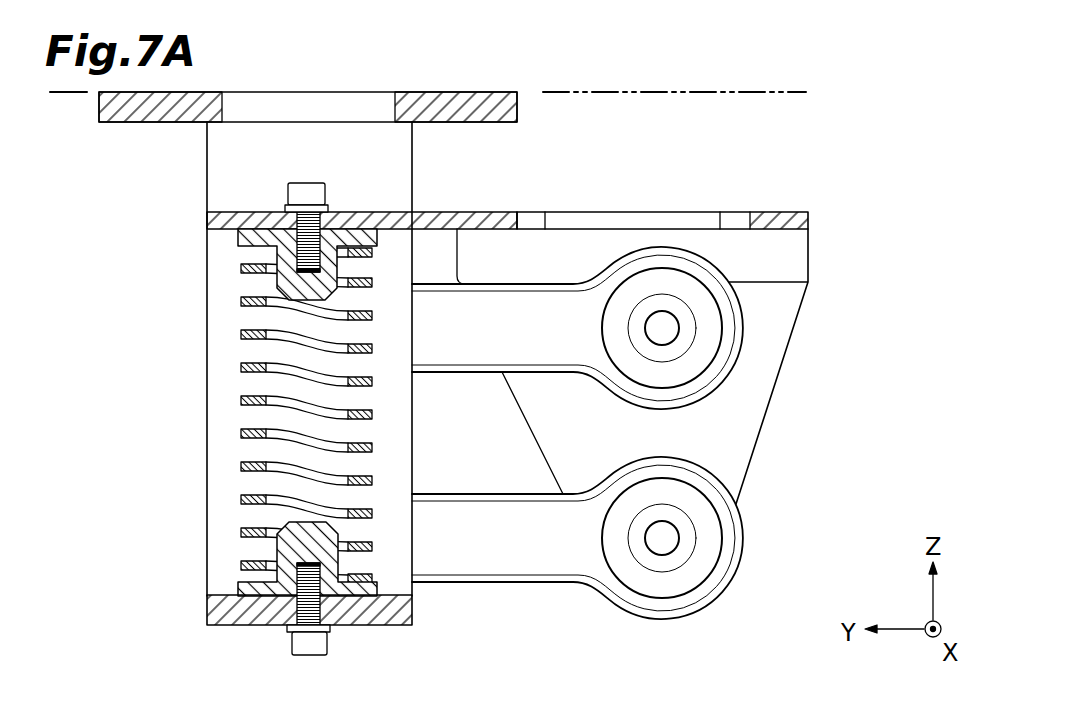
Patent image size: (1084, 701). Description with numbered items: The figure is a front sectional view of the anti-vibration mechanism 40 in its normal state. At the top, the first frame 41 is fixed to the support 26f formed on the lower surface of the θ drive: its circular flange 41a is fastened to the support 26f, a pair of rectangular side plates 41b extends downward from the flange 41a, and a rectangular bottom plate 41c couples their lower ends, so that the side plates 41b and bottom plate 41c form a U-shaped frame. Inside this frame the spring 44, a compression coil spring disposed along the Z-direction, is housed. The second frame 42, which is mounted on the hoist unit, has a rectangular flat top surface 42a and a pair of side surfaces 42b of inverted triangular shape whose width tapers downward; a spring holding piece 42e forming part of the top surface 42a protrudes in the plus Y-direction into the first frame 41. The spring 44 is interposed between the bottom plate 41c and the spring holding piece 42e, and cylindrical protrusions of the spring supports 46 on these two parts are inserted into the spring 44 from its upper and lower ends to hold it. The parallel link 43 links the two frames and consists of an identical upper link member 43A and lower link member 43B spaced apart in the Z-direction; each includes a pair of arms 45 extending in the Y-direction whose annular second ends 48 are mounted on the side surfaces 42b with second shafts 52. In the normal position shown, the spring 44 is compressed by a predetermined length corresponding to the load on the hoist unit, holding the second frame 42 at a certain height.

The anti-vibration mechanism 40 is at (736, 186).
The support 26f is at (588, 96).
The first frame 41 is at (203, 637).
The flange 41a is at (433, 92).
The side plates 41b is at (206, 499).
The bottom plate 41c is at (253, 626).
The second frame 42 is at (780, 408).
The top surface 42a is at (776, 210).
The side surfaces 42b is at (760, 354).
The spring holding piece 42e is at (248, 212).
The parallel link 43 is at (661, 409).
The upper link member 43A is at (742, 268).
The lower link member 43B is at (748, 502).
The spring 44 is at (240, 366).
The arms 45 is at (478, 584).
The spring supports 46 is at (330, 268).
The second ends 48 is at (748, 322).
The second shafts 52 is at (667, 325).